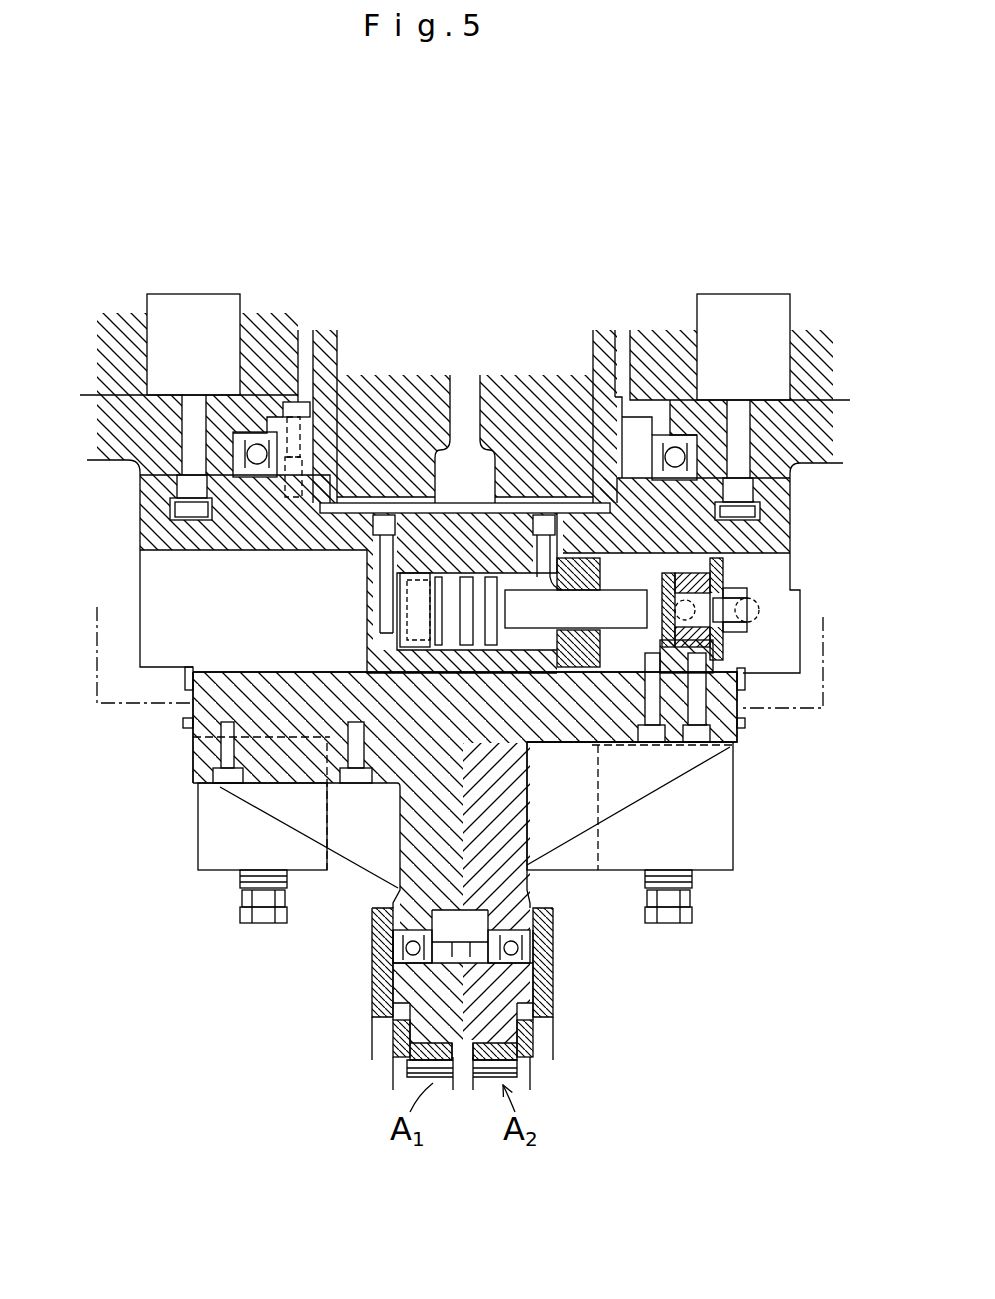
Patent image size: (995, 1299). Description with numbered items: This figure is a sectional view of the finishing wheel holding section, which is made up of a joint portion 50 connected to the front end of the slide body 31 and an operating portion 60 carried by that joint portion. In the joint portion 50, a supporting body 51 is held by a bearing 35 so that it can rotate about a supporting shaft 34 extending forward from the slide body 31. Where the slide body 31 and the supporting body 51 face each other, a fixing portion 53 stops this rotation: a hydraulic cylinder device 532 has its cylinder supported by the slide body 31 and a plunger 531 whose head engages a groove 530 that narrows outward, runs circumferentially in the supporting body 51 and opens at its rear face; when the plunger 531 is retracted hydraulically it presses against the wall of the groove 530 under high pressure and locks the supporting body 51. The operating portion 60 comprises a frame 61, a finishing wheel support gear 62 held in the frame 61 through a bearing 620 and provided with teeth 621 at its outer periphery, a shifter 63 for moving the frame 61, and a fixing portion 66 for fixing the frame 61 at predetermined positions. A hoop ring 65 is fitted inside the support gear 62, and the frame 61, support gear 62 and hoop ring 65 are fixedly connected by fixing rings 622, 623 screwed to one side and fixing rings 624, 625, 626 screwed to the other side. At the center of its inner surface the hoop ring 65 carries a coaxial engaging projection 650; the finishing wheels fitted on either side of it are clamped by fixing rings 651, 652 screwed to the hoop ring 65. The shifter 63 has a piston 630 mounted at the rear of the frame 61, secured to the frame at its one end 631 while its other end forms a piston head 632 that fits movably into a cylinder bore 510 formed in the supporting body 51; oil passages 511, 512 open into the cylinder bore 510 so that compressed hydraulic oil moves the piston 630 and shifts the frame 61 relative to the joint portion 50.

The slide body 31 is at (467, 338).
The supporting shaft 34 is at (327, 340).
The bearing 35 is at (242, 440).
The joint portion 50 is at (68, 540).
The supporting body 51 is at (285, 532).
The fixing portion 53 is at (187, 558).
The cylinder bore 510 is at (370, 653).
The oil passage 511 is at (387, 517).
The oil passage 512 is at (543, 517).
The groove 530 is at (180, 527).
The plunger 531 is at (180, 510).
The hydraulic cylinder device 532 is at (211, 357).
The operating portion 60 is at (143, 898).
The frame 61 is at (510, 793).
The finishing wheel support gear 62 is at (513, 990).
The shifter 63 is at (835, 617).
The hoop ring 65 is at (503, 1032).
The fixing portion 66 is at (223, 838).
The bearing 620 is at (523, 935).
The teeth 621 is at (528, 888).
The fixing ring 622 is at (375, 932).
The fixing ring 623 is at (377, 990).
The fixing ring 624 is at (540, 945).
The fixing ring 625 is at (553, 970).
The fixing ring 626 is at (553, 1010).
The piston 630 is at (591, 623).
The piston end 631 is at (735, 612).
The piston head 632 is at (443, 618).
The engaging projection 650 is at (466, 1058).
The fixing ring 651 is at (393, 1040).
The fixing ring 652 is at (533, 1057).